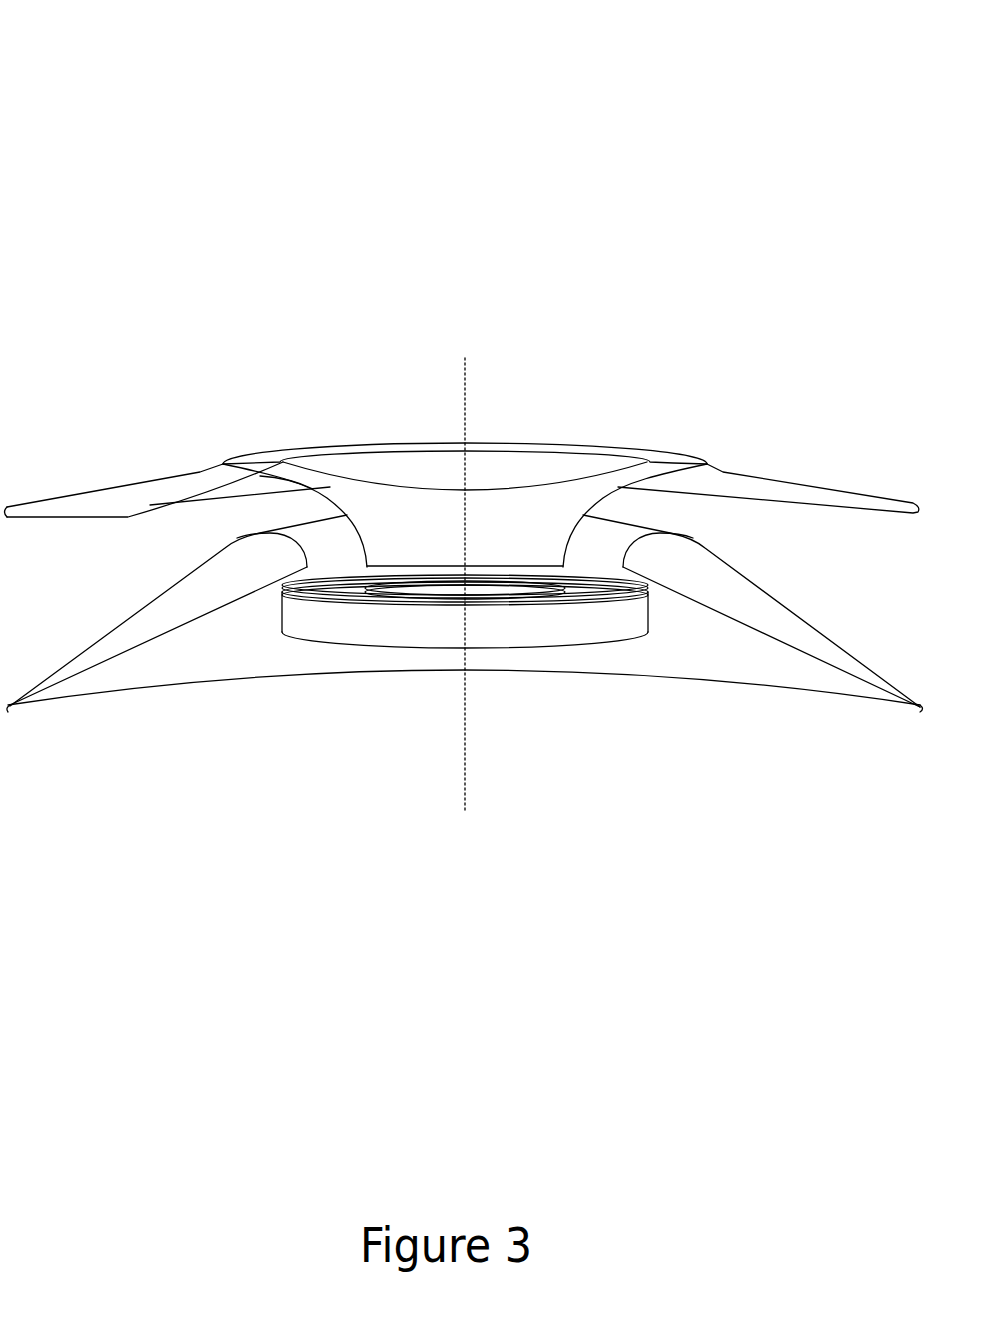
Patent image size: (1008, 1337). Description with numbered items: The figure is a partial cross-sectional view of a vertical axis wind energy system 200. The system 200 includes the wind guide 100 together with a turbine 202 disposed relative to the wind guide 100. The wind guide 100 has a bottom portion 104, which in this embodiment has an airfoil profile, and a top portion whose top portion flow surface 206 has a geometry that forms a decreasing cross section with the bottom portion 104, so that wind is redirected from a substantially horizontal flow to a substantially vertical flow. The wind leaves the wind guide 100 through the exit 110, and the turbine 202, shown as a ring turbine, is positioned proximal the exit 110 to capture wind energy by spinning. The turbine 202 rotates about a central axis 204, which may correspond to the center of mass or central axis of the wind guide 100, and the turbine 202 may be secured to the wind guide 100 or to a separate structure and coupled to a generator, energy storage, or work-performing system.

The vertical axis wind energy system 200 is at (180, 64).
The wind guide 100 is at (787, 364).
The bottom portion 104 is at (98, 488).
The exit 110 is at (326, 542).
The turbine 202 is at (432, 592).
The central axis 204 is at (460, 416).
The top portion flow surface 206 is at (829, 516).